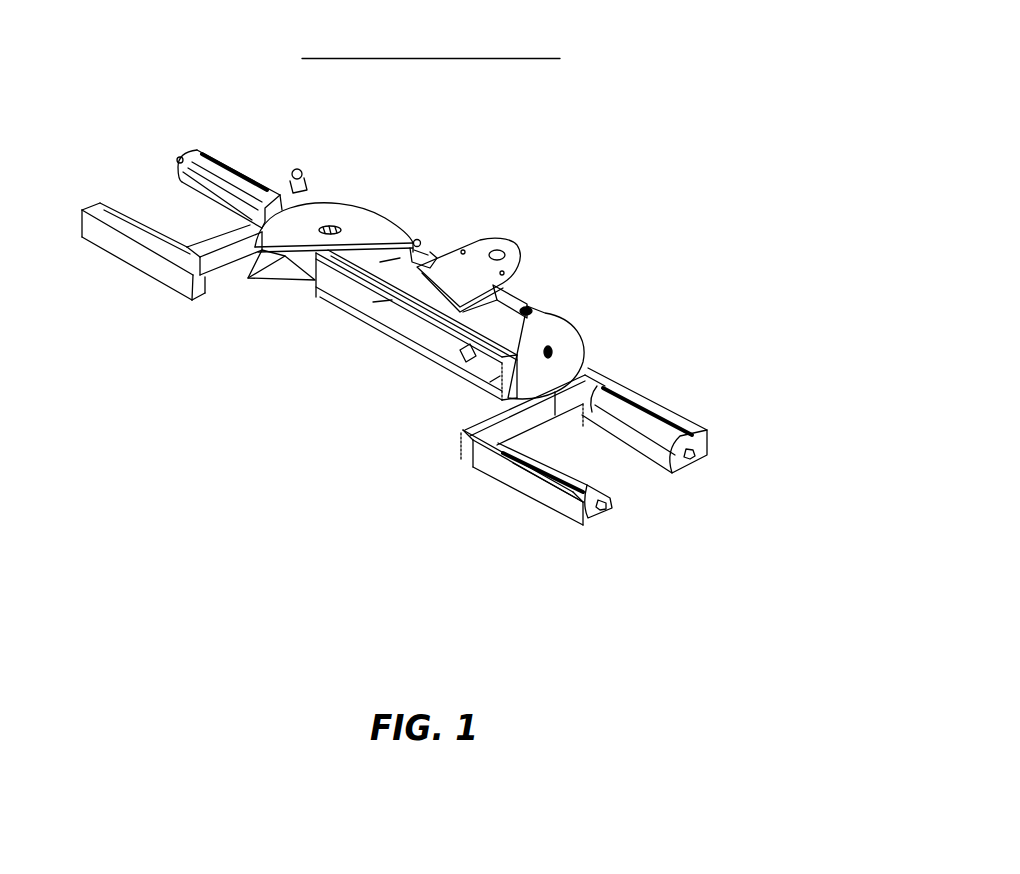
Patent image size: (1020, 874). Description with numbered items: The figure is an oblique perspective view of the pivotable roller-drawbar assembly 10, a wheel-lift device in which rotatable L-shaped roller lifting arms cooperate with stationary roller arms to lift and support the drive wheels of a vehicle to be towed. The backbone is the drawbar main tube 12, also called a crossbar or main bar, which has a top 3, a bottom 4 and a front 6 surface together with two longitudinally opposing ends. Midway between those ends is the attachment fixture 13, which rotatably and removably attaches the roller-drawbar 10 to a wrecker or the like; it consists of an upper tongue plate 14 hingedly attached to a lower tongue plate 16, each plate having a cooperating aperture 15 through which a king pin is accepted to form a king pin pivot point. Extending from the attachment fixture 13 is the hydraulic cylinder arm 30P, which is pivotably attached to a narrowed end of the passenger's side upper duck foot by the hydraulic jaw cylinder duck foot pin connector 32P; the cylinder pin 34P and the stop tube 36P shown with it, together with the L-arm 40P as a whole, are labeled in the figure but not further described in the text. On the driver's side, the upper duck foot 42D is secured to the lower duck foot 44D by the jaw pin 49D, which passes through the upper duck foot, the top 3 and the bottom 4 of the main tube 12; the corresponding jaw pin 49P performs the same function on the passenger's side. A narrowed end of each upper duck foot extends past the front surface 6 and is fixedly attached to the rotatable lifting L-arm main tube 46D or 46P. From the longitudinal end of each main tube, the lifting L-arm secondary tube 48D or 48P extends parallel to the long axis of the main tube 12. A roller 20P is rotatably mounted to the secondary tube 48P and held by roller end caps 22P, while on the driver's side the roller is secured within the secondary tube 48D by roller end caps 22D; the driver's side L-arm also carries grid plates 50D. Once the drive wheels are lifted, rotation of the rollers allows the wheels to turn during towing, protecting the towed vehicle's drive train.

The pivotable roller-drawbar assembly 10 is at (612, 52).
The drawbar main tube 12 is at (391, 284).
The top surface 3 is at (380, 262).
The front surface 6 is at (373, 302).
The bottom surface 4 is at (490, 382).
The attachment fixture 13 is at (621, 270).
The upper tongue plate 14 is at (487, 245).
The aperture 15 is at (505, 254).
The lower tongue plate 16 is at (522, 297).
The roller 20P is at (637, 418).
The roller end cap 22P is at (603, 397).
The roller end cap 22D is at (176, 176).
The hydraulic cylinder arm 30P is at (438, 250).
The hydraulic jaw cylinder duck foot pin connector 32P is at (533, 309).
The L arm hydraulic cylinder pin 34P is at (417, 240).
The L arm stop tube 36P is at (463, 356).
The L arm 40P is at (438, 459).
The upper duck foot 42D is at (344, 217).
The lower duck foot 44D is at (288, 272).
The rotatable lifting L-arm main tube 46D is at (228, 294).
The rotatable lifting L-arm main tube 46P is at (466, 455).
The lifting L-arm secondary tube 48D is at (148, 270).
The lifting L-arm secondary tube 48P is at (518, 478).
The lifting L-arm pin (jaw pin) 49D is at (376, 206).
The lifting L-arm pin (jaw pin) 49P is at (553, 352).
The lifting L-arm grid plates 50D is at (193, 190).